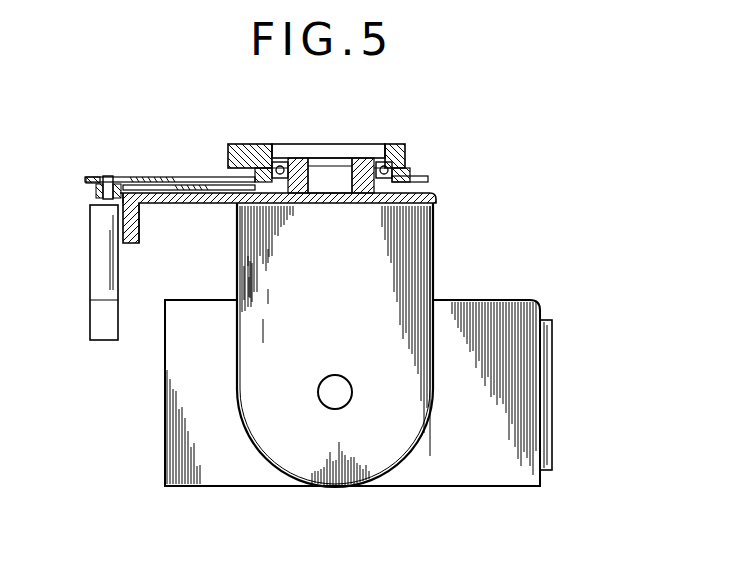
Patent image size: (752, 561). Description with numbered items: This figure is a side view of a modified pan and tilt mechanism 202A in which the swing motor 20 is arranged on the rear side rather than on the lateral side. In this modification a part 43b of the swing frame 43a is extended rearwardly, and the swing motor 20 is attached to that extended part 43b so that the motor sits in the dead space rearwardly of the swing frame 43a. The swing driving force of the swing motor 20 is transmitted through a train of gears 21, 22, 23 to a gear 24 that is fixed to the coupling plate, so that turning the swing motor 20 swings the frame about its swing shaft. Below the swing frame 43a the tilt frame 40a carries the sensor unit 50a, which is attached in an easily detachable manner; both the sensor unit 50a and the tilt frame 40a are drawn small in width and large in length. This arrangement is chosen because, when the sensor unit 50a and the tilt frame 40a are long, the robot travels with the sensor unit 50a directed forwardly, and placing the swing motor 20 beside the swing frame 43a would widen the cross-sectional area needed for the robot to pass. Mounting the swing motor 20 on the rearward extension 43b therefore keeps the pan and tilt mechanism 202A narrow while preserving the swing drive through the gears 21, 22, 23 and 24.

The pan and tilt mechanism 202A is at (522, 202).
The swing motor 20 is at (100, 243).
The gear 21 is at (98, 178).
The gear 22 is at (152, 178).
The gear 23 is at (208, 184).
The gear 24 is at (416, 177).
The swing frame 43a is at (432, 259).
The extended part of swing frame 43b is at (166, 204).
The tilt frame 40a is at (198, 484).
The sensor unit 50a is at (553, 450).